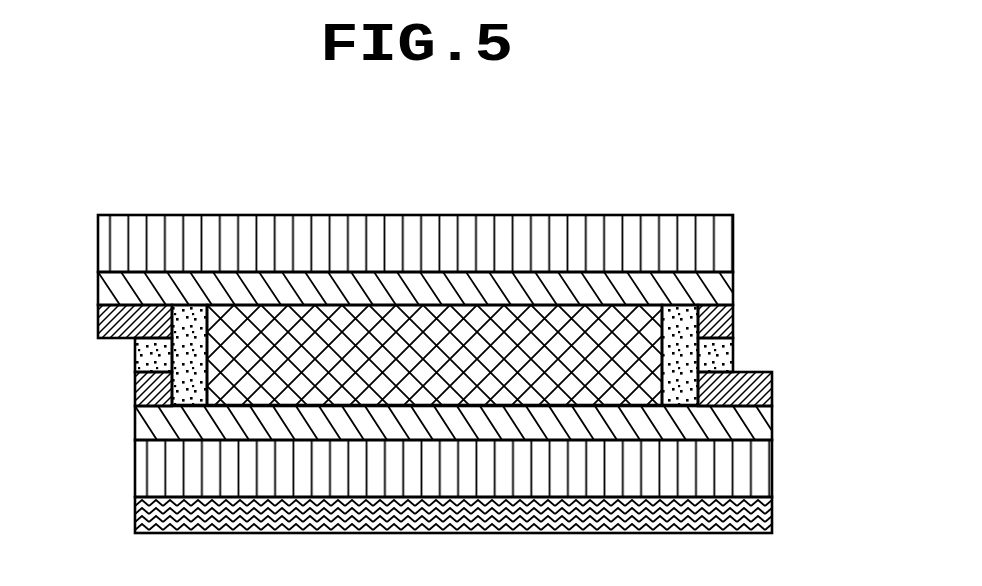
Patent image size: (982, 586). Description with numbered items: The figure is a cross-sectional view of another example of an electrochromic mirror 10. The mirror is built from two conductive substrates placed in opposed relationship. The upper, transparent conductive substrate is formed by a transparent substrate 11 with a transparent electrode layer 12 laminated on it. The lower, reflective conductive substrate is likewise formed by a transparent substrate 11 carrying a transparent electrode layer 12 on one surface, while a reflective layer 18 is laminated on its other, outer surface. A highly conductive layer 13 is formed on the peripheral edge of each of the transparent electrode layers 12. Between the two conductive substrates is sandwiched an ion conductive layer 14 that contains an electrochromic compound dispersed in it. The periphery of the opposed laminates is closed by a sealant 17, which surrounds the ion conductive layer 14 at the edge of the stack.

The electrochromic mirror 10 is at (663, 172).
The transparent substrate 11 is at (725, 243).
The transparent electrode layer 12 is at (720, 283).
The highly conductive layer 13 is at (733, 318).
The ion conductive layer 14 is at (225, 382).
The sealant 17 is at (140, 362).
The reflective layer 18 is at (775, 518).